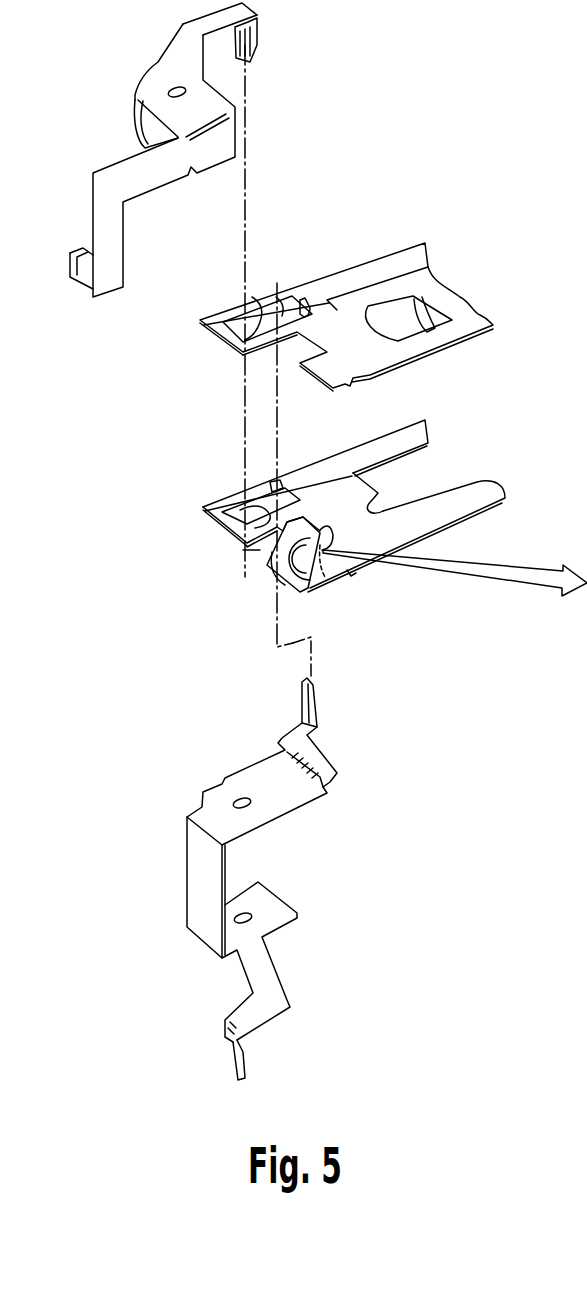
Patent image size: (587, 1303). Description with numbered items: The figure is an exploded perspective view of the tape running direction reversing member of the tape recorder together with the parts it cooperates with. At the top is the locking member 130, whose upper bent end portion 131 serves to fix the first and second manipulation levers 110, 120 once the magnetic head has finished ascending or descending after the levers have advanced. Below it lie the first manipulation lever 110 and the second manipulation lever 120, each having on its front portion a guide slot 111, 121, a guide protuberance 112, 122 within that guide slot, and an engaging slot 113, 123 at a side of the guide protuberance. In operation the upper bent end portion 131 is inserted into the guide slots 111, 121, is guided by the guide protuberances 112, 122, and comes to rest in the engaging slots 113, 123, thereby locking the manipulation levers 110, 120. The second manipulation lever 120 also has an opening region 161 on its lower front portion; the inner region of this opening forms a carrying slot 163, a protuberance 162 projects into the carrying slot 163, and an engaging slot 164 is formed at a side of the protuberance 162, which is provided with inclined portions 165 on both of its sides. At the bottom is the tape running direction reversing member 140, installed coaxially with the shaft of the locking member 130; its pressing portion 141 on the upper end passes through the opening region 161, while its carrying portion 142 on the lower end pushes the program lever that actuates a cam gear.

The first manipulation lever 110 is at (387, 268).
The guide slot 111 is at (250, 300).
The guide protuberance 112 is at (245, 360).
The engaging slot 113 is at (297, 300).
The second manipulation lever 120 is at (470, 498).
The guide slot 121 is at (237, 510).
The guide protuberance 122 is at (232, 542).
The engaging slot 123 is at (277, 482).
The locking member 130 is at (146, 72).
The upper bent end portion 131 is at (253, 45).
The tape running direction reversing member 140 is at (207, 822).
The pressing portion 141 is at (308, 708).
The carrying portion 142 is at (236, 1048).
The opening region 161 is at (242, 552).
The protuberance 162 is at (287, 583).
The carrying slot 163 is at (428, 462).
The engaging slot 164 is at (320, 530).
The inclined portions 165 is at (455, 610).